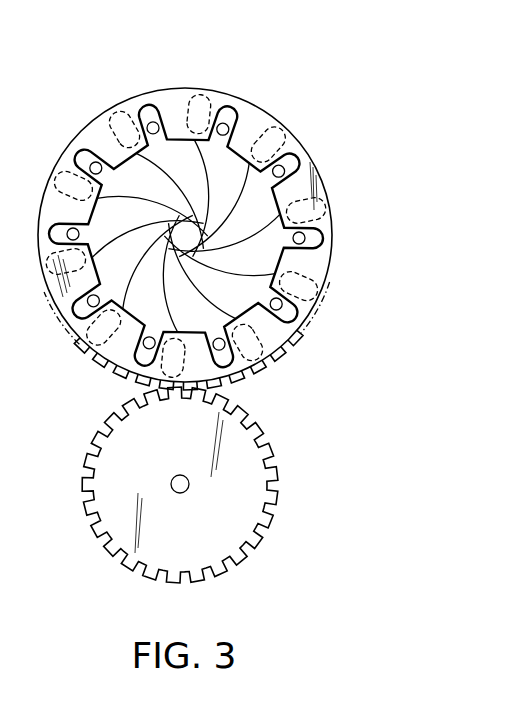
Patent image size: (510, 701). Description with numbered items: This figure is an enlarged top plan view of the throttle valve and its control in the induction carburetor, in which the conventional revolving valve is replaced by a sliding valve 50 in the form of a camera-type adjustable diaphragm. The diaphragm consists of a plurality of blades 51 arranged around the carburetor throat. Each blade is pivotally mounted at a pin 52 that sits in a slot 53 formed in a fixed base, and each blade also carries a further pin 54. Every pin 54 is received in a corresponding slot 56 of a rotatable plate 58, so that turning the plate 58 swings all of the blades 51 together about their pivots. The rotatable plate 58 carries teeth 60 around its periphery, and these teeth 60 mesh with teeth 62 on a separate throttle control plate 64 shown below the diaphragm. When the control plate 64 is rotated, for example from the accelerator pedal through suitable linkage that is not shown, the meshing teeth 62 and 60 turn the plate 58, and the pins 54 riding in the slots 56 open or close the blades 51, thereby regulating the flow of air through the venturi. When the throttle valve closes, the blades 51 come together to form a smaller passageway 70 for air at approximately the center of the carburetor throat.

The sliding valve 50 is at (331, 396).
The blades 51 is at (217, 172).
The pin 52 is at (230, 96).
The slot 53 is at (136, 101).
The pin 54 is at (154, 124).
The slot 56 is at (149, 103).
The rotatable plate 58 is at (55, 277).
The teeth 60 is at (103, 370).
The teeth 62 is at (93, 431).
The throttle control plate 64 is at (248, 518).
The smaller passageway 70 is at (290, 260).